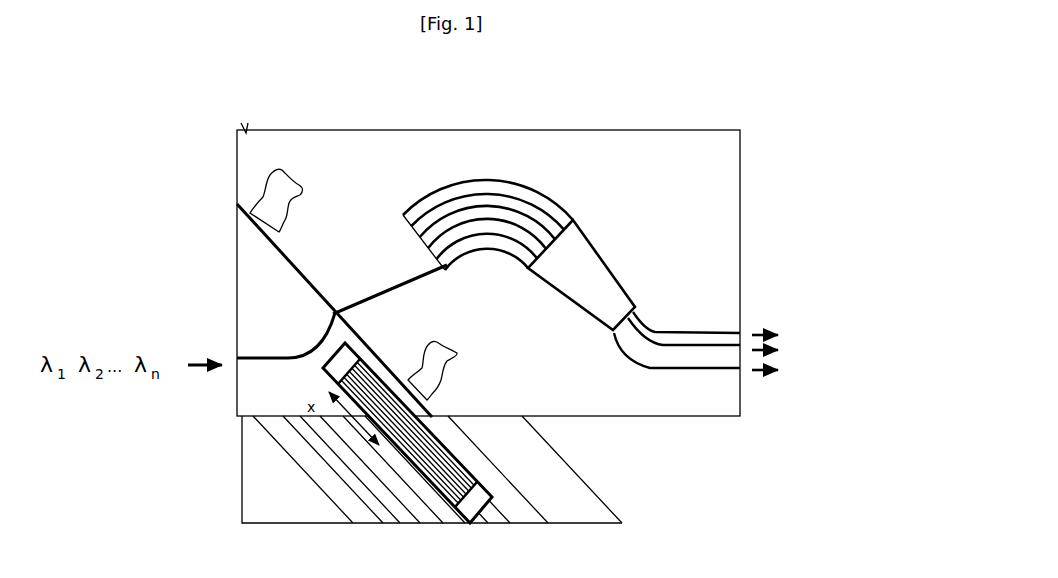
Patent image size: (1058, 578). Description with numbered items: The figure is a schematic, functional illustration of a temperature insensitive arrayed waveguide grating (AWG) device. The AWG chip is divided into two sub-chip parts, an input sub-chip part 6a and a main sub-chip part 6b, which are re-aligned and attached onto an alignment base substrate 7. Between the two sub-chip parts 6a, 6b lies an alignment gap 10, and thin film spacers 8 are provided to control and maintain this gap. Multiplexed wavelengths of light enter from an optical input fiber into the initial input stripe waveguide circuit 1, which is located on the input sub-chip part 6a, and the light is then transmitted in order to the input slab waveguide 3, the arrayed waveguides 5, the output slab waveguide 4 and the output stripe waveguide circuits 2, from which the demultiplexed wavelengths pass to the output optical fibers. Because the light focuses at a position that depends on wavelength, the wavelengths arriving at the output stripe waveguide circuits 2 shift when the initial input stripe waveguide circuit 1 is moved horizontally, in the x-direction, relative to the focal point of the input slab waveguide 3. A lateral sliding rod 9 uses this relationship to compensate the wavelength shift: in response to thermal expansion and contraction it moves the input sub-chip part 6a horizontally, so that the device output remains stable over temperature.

The initial input stripe waveguide circuit 1 is at (291, 355).
The output stripe waveguide circuits 2 is at (730, 328).
The input slab waveguide 3 is at (385, 276).
The output slab waveguide 4 is at (596, 268).
The arrayed waveguides 5 is at (492, 190).
The input sub-chip part 6a is at (250, 390).
The main sub-chip part 6b is at (535, 392).
The alignment base substrate 7 is at (273, 487).
The thin film spacers 8 is at (438, 345).
The lateral sliding rod 9 is at (440, 480).
The alignment gap 10 is at (274, 253).